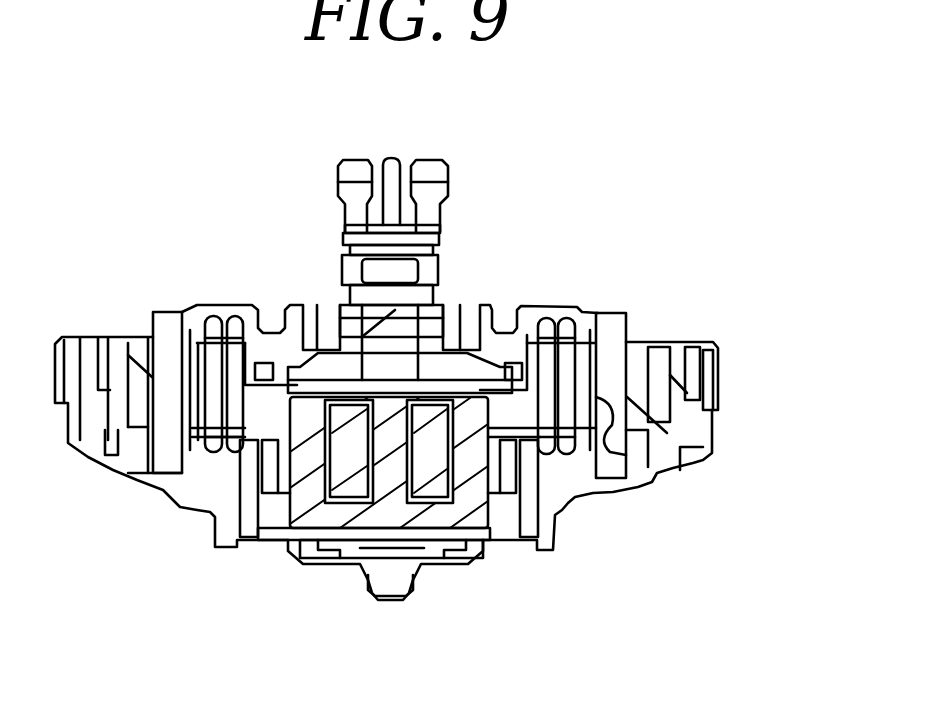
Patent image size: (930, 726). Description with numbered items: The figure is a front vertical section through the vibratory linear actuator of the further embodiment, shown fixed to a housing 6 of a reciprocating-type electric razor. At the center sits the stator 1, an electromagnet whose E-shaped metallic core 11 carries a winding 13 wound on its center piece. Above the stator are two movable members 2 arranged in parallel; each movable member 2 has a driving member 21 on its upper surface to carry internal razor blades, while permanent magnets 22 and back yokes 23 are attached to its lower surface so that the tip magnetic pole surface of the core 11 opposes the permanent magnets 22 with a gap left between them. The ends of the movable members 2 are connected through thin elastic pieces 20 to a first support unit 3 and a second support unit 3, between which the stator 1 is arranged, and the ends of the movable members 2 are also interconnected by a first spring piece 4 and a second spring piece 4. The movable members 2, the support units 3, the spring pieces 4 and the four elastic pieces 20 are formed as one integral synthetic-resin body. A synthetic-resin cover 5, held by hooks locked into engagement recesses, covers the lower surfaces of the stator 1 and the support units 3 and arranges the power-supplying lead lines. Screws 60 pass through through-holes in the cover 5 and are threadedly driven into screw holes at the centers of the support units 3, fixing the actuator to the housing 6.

The stator 1 is at (318, 515).
The movable member 2 is at (557, 305).
The support unit 3 is at (223, 500).
The spring piece 4 is at (160, 340).
The cover 5 is at (445, 562).
The housing 6 is at (120, 462).
The core 11 is at (470, 457).
The winding 13 is at (500, 535).
The thin elastic piece 20 is at (583, 330).
The driving member 21 is at (432, 163).
The permanent magnet 22 is at (397, 388).
The back yoke 23 is at (385, 362).
The screw 60 is at (270, 480).